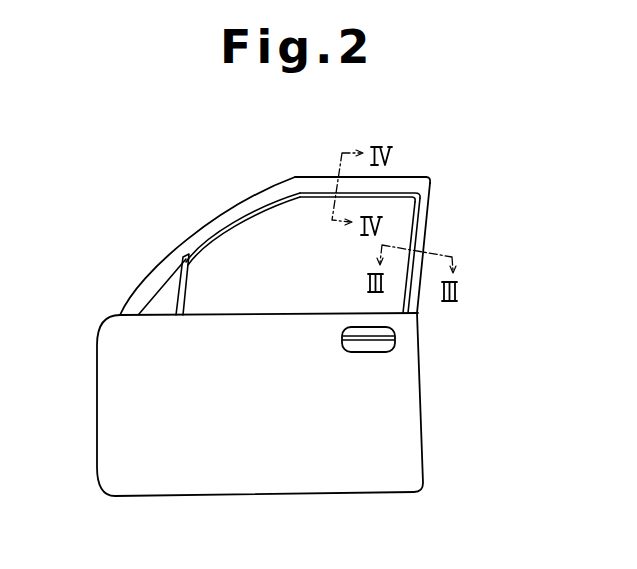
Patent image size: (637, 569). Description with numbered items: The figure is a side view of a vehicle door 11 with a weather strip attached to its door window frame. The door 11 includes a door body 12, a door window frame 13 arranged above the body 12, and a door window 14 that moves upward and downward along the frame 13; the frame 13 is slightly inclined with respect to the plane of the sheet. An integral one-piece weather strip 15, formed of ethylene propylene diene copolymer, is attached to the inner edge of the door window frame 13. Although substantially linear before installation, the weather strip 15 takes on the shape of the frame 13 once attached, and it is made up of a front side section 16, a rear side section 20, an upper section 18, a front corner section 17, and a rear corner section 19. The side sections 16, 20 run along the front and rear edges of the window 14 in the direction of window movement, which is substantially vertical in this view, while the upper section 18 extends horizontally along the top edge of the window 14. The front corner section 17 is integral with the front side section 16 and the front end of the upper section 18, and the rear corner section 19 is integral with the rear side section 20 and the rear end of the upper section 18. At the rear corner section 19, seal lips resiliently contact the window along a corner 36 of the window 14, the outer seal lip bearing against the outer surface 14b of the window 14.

The door 11 is at (422, 467).
The door body 12 is at (407, 402).
The door window frame 13 is at (430, 226).
The door window 14 is at (240, 238).
The outer surface 14b is at (302, 211).
The weather strip 15 is at (408, 180).
The front side section 16 is at (175, 302).
The front corner section 17 is at (183, 257).
The upper section 18 is at (267, 200).
The rear corner section 19 is at (436, 193).
The rear side section 20 is at (407, 302).
The corner 36 is at (194, 283).